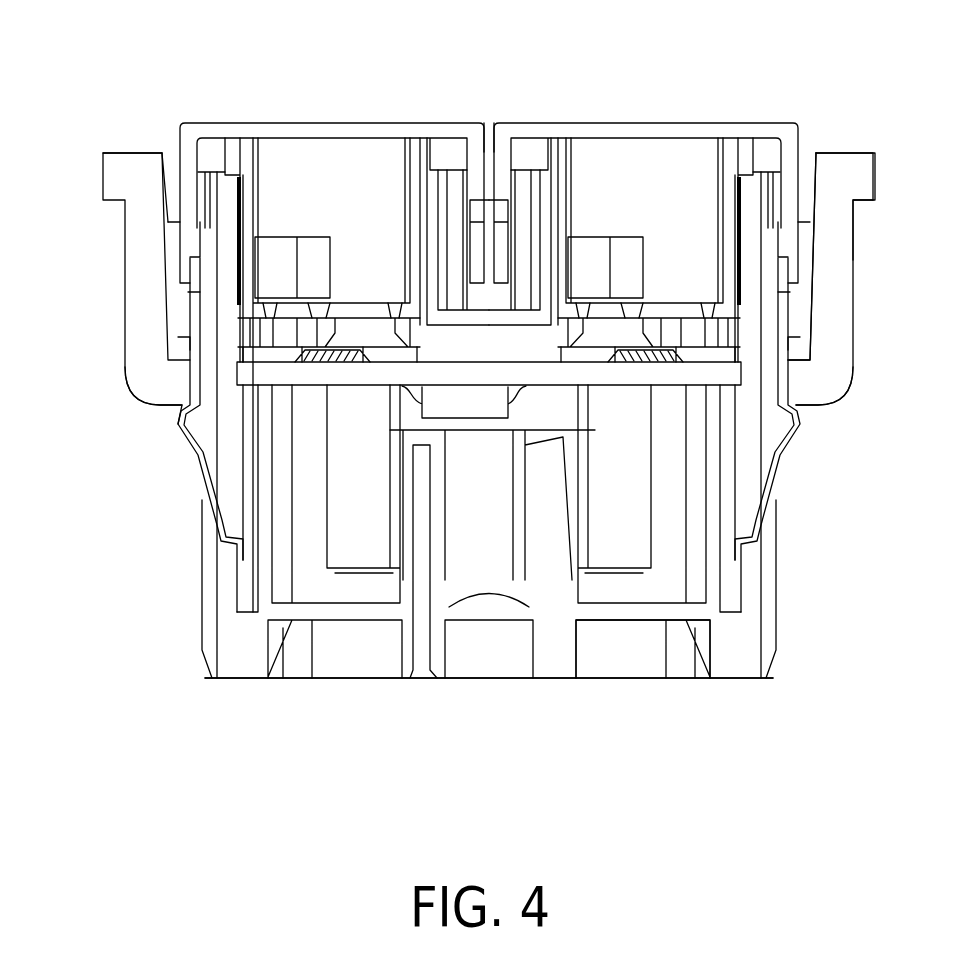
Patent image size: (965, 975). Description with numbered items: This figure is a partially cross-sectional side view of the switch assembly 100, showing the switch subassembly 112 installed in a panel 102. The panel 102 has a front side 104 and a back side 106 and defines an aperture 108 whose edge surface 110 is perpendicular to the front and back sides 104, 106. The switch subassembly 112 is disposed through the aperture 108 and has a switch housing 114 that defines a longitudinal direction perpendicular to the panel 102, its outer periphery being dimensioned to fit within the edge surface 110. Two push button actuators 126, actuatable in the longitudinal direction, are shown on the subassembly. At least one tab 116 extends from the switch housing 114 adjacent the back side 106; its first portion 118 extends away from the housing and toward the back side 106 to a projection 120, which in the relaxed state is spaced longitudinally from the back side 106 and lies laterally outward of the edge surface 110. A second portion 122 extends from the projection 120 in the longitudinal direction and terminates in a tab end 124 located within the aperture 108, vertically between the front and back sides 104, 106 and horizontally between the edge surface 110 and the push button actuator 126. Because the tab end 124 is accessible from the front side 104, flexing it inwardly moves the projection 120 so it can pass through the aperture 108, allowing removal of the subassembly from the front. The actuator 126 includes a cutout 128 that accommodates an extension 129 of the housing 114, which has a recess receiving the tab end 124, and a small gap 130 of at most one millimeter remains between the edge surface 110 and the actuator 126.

The switch assembly 100 is at (495, 397).
The panel 102 is at (867, 172).
The front side 104 is at (843, 152).
The back side 106 is at (853, 201).
The aperture 108 is at (810, 150).
The edge surface 110 is at (786, 383).
The switch subassembly 112 is at (560, 708).
The switch housing 114 is at (737, 670).
The tab 116 is at (784, 485).
The first portion 118 is at (190, 460).
The projection 120 is at (182, 418).
The second portion 122 is at (193, 303).
The tab end 124 is at (197, 257).
The push button actuator 126 is at (370, 127).
The cutout 128 is at (795, 210).
The extension 129 is at (778, 238).
The gap 130 is at (176, 148).